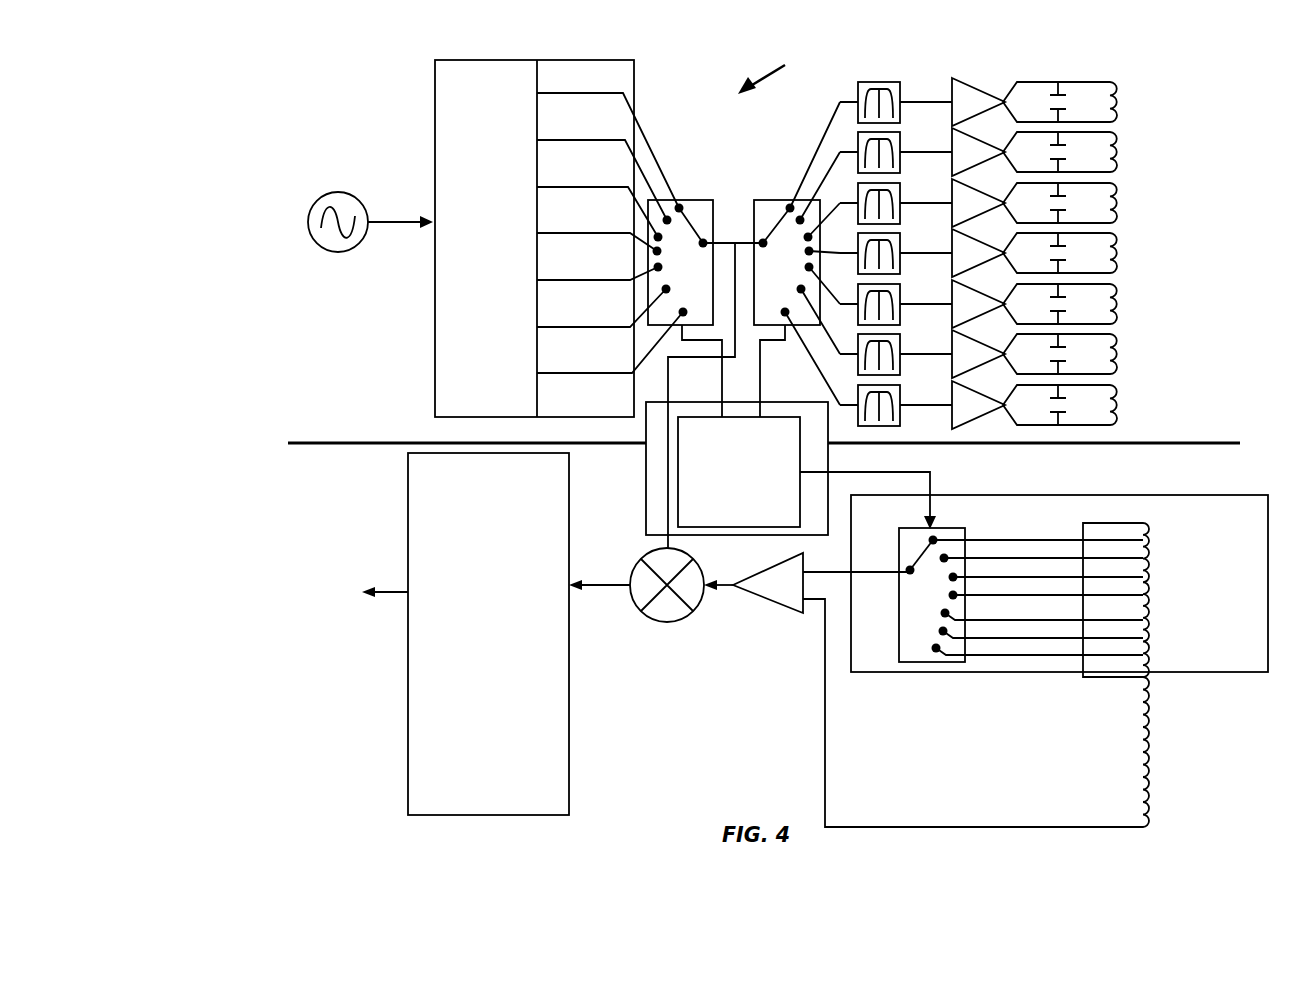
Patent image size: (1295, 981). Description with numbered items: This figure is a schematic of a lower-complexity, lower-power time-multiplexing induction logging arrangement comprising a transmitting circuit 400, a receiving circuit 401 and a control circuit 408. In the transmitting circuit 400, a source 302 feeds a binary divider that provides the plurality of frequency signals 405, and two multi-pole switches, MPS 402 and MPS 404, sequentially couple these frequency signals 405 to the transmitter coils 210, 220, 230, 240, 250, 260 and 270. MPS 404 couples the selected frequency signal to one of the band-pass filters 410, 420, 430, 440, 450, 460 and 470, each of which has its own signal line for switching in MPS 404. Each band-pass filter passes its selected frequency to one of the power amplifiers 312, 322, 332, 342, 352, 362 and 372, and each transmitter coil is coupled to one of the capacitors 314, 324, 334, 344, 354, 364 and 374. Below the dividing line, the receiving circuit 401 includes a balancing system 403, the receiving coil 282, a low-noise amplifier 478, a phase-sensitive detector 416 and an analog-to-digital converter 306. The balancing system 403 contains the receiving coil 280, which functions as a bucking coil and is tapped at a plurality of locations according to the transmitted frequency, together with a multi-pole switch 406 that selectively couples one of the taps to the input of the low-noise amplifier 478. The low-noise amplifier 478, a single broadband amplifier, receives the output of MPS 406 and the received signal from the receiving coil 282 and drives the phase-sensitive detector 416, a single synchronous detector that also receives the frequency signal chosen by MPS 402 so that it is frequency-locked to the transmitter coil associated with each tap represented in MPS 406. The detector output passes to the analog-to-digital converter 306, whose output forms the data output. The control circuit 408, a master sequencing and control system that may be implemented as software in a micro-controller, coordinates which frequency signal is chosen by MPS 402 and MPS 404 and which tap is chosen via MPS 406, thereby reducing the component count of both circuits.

The transmitting circuit 400 is at (764, 241).
The oscillator 302 is at (275, 302).
The frequency signals 405 is at (634, 75).
The multi-pole switch (MPS) 402 is at (705, 346).
The multi-pole switch (MPS) 404 is at (785, 281).
The band-pass filter 470 is at (871, 144).
The band-pass filter 460 is at (876, 175).
The band-pass filter 450 is at (880, 209).
The band-pass filter 440 is at (880, 252).
The band-pass filter 430 is at (880, 296).
The band-pass filter 420 is at (876, 332).
The band-pass filter 410 is at (868, 369).
The power amplifier 372 is at (1039, 102).
The power amplifier 362 is at (1039, 152).
The power amplifier 352 is at (1039, 203).
The tuning capacitor 342 is at (1039, 253).
The power amplifier 332 is at (1039, 304).
The power amplifier 322 is at (1039, 354).
The power amplifier 312 is at (1039, 405).
The capacitor 374 is at (1091, 102).
The capacitor 364 is at (1091, 152).
The capacitor 354 is at (1091, 203).
The capacitor 344 is at (1091, 253).
The capacitor 334 is at (1091, 304).
The capacitor 324 is at (1091, 354).
The capacitor 314 is at (1091, 405).
The transmitter coil 270 is at (1069, 103).
The transmitter coil 260 is at (1069, 153).
The transmitter coil 250 is at (1069, 204).
The transmitter coil 240 is at (1069, 254).
The transmitter coil 230 is at (1069, 305).
The transmitter coil 220 is at (1069, 355).
The transmitter coil 210 is at (1069, 406).
The control circuit 408 is at (757, 519).
The phase-sensitive detector 416 is at (702, 563).
The low-noise amplifier 478 is at (752, 598).
The analog-to-digital converter 306 is at (514, 637).
The receiving circuit 401 is at (278, 575).
The balancing system 403 is at (940, 672).
The multi-pole switch 406 is at (941, 602).
The receiving coil 280 is at (1152, 590).
The receiving coil 282 is at (1152, 752).